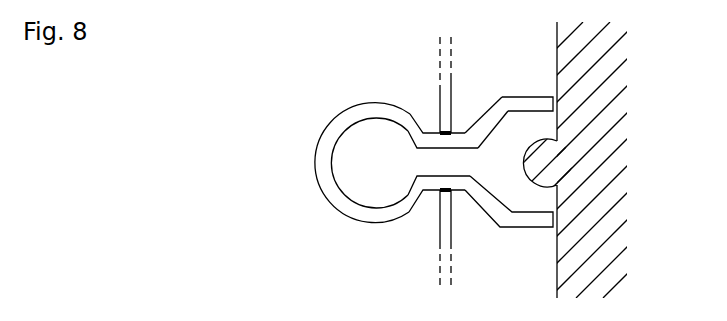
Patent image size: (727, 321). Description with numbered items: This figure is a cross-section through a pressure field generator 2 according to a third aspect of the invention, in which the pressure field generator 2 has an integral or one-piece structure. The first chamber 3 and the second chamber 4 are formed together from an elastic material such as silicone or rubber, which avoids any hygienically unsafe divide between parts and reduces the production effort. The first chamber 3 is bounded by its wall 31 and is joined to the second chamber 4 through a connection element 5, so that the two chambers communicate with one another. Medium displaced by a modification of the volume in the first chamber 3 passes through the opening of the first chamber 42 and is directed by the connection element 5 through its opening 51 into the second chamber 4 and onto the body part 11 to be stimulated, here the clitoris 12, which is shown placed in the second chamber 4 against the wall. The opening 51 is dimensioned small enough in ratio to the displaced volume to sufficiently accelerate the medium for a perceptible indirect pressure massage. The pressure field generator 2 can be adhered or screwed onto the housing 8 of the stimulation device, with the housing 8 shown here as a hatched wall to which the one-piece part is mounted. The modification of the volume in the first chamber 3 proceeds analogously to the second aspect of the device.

The pressure field generator 2 is at (287, 217).
The first chamber 3 is at (378, 163).
The wall of first chamber 31 is at (340, 125).
The second chamber 4 is at (500, 173).
The opening of first chamber 42 is at (543, 122).
The connection element 5 is at (447, 158).
The opening of connection element to second chamber 51 is at (470, 160).
The housing 8 is at (442, 87).
The body part 11 is at (600, 47).
The clitoris 12 is at (543, 150).